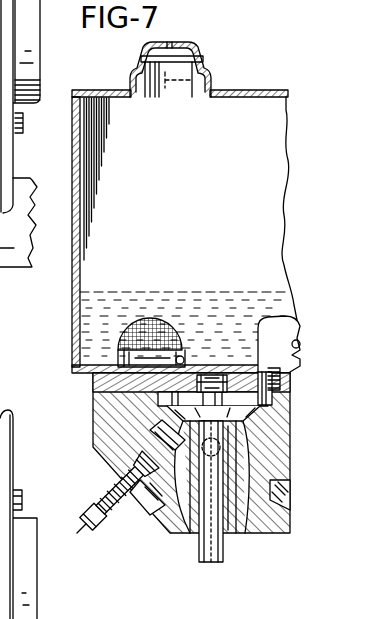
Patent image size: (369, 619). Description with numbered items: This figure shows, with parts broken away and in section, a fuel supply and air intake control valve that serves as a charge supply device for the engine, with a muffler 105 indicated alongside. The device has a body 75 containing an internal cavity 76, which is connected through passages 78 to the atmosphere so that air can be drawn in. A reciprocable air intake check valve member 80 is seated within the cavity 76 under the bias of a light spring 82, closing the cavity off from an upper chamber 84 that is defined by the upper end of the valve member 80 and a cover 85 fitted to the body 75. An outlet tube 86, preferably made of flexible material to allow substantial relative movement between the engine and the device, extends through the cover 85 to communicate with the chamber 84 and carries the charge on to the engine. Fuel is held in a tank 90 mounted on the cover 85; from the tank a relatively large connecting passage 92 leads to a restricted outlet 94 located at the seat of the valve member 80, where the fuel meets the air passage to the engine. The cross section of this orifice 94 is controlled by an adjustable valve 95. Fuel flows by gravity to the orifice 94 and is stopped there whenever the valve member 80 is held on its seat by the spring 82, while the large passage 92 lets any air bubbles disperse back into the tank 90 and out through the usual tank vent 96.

The body 75 is at (178, 522).
The internal cavity 76 is at (243, 533).
The passages 78 is at (152, 510).
The air intake check valve member 80 is at (193, 417).
The light spring 82 is at (213, 375).
The upper chamber 84 is at (254, 400).
The cover 85 is at (93, 383).
The outlet tube 86 is at (278, 327).
The fuel tank 90 is at (72, 284).
The connecting passage 92 is at (147, 424).
The restricted outlet 94 is at (193, 535).
The adjustable valve 95 is at (163, 421).
The tank vent 96 is at (171, 36).
The muffler 105 is at (0, 563).